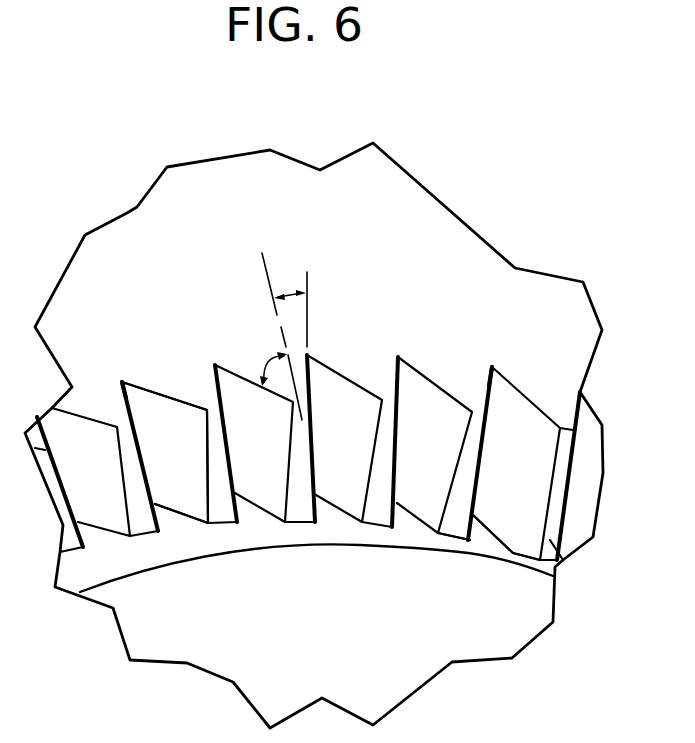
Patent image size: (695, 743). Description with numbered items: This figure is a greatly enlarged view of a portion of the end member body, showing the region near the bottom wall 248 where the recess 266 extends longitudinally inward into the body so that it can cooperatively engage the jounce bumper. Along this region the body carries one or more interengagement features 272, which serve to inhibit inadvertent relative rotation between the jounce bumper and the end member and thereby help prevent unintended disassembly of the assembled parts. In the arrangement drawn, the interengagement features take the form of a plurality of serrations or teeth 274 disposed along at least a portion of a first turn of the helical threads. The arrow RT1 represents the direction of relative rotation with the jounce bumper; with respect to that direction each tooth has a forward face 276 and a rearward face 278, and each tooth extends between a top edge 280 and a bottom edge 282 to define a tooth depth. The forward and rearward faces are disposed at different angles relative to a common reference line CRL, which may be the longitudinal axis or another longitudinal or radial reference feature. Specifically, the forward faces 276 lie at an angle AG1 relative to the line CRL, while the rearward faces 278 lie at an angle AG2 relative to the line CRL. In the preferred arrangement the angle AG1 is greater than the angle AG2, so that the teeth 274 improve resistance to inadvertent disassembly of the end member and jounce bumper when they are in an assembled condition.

The bottom wall 248 is at (378, 163).
The recess 266 is at (417, 663).
The interengagement features 272 is at (435, 232).
The teeth 274 is at (362, 543).
The forward face 276 is at (166, 410).
The rearward face 278 is at (219, 398).
The top edge 280 is at (528, 548).
The bottom edge 282 is at (123, 380).
The direction of relative rotation arrow RT1 is at (413, 265).
The common reference line CRL is at (260, 268).
The forward face angle AG1 is at (263, 370).
The rearward face angle AG2 is at (290, 288).